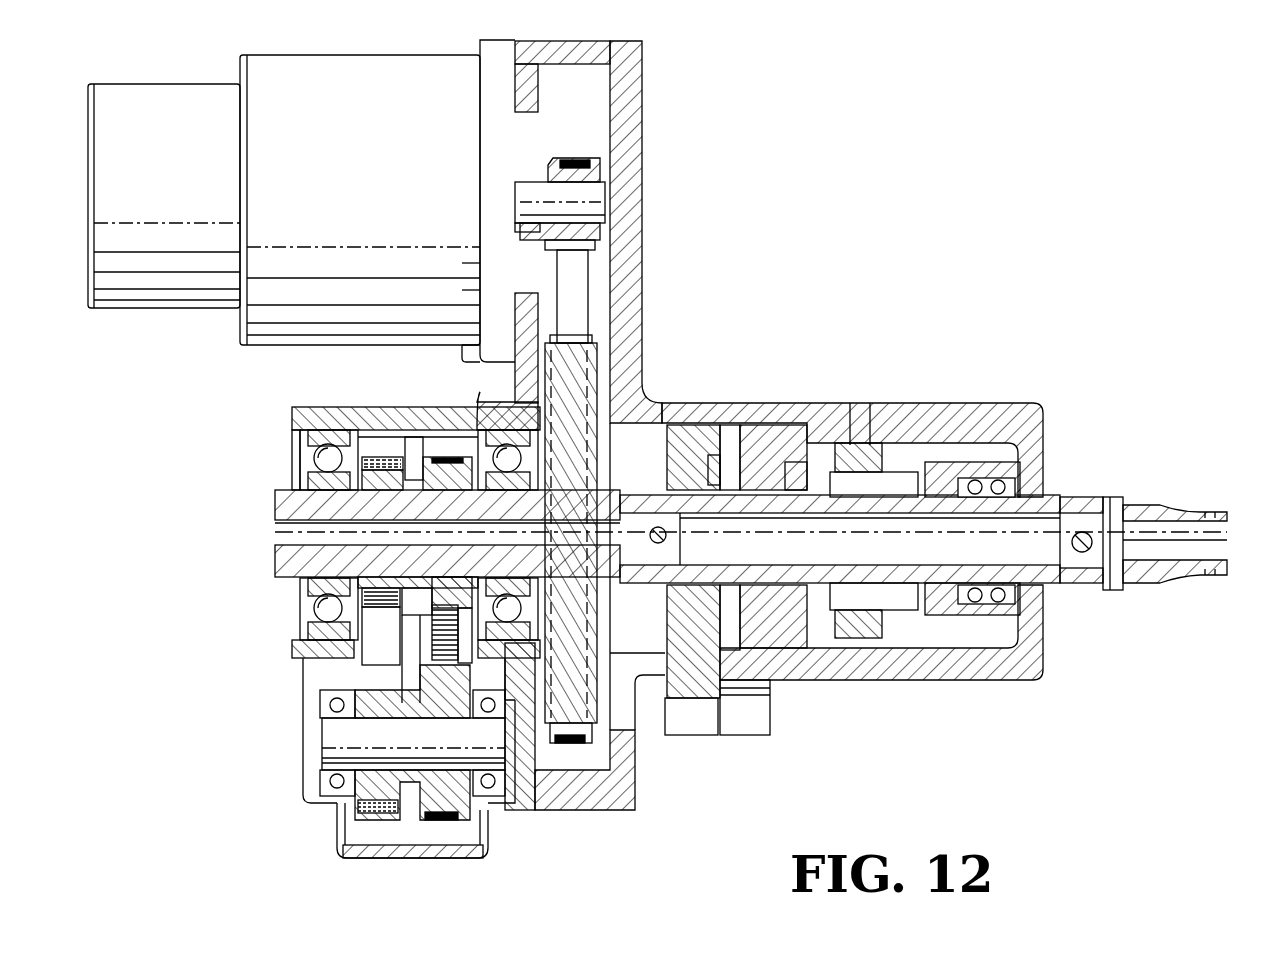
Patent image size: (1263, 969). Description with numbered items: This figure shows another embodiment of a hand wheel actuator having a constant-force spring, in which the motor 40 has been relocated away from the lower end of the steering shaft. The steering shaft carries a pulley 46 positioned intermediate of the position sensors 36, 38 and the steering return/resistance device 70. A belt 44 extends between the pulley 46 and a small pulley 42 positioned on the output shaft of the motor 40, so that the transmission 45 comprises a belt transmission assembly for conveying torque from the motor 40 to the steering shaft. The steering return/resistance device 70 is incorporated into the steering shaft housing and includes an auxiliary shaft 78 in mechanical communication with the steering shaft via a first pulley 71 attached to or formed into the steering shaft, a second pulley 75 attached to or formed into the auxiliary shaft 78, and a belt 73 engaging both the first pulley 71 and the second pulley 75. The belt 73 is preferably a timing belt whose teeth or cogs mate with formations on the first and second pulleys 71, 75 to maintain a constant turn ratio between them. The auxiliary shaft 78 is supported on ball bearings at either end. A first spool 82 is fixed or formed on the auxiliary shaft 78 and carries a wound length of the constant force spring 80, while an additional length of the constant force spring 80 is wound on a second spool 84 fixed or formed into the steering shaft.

The position sensor 36 is at (770, 430).
The position sensor 38 is at (712, 430).
The motor 40 is at (362, 169).
The small pulley 42 is at (600, 155).
The belt 44 is at (590, 262).
The transmission 45 is at (684, 160).
The pulley 46 is at (600, 367).
The steering return/resistance device 70 is at (255, 790).
The first pulley 71 is at (440, 465).
The belt 73 is at (418, 633).
The second pulley 75 is at (460, 808).
The auxiliary shaft 78 is at (337, 735).
The constant force spring 80 is at (370, 662).
The first spool 82 is at (365, 785).
The second spool 84 is at (365, 468).